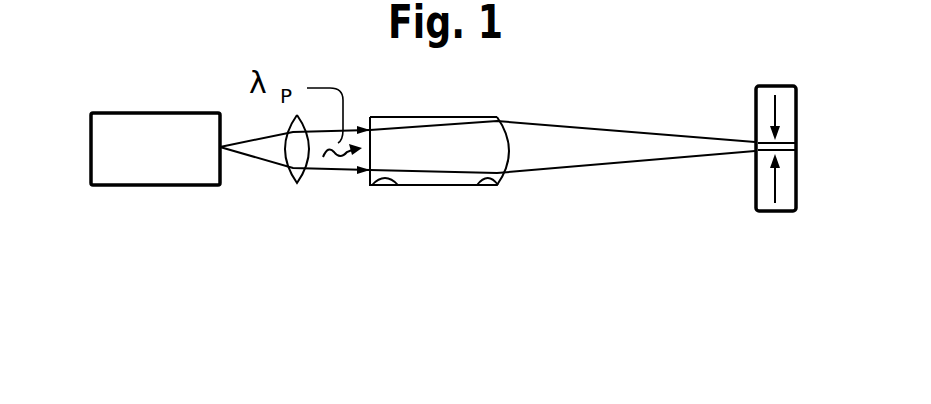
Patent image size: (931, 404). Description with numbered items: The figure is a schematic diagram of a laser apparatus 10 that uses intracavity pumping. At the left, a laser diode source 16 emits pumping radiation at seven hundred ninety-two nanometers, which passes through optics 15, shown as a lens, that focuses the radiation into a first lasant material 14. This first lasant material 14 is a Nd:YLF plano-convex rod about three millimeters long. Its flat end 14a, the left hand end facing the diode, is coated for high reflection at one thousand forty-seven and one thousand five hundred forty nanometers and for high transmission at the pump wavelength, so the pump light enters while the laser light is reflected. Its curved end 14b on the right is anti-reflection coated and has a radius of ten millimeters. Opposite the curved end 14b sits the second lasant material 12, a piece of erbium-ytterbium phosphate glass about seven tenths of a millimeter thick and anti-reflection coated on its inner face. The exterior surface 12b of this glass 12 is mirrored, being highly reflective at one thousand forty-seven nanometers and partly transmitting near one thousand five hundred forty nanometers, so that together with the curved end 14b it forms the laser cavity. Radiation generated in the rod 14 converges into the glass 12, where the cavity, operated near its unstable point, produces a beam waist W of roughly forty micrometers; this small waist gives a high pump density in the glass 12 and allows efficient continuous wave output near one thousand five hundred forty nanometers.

The laser apparatus 10 is at (440, 196).
The second lasant material 12 is at (765, 197).
The exterior surface 12b is at (790, 208).
The first lasant material 14 is at (418, 121).
The flat end 14a is at (398, 187).
The curved end 14b is at (478, 188).
The optics 15 is at (300, 185).
The laser diode source 16 is at (188, 187).
The beam waist W is at (797, 147).